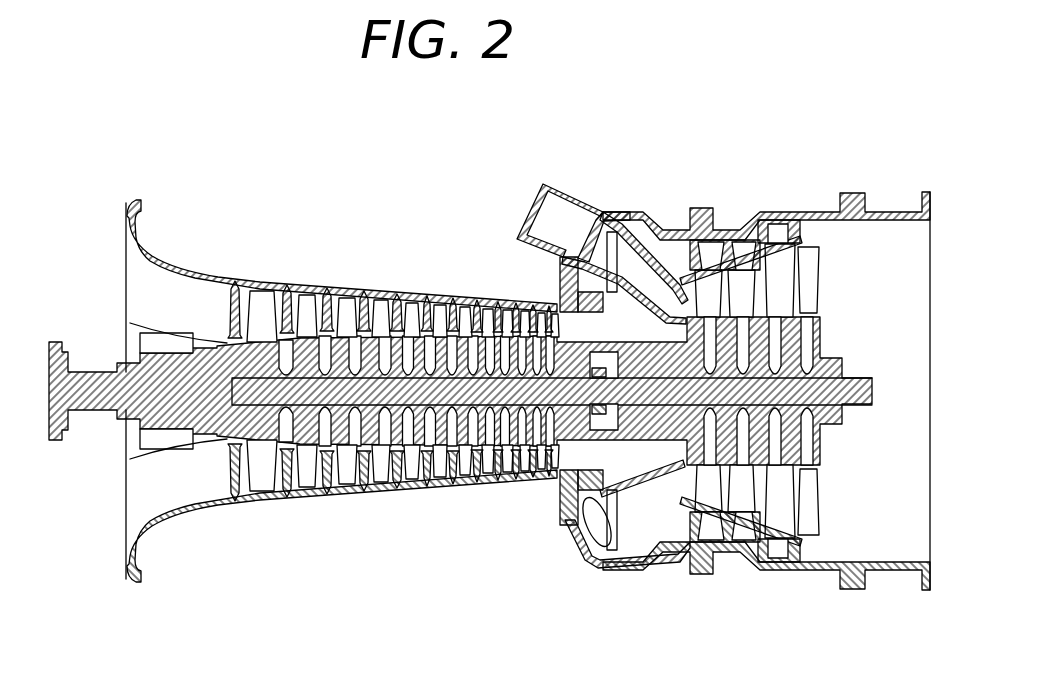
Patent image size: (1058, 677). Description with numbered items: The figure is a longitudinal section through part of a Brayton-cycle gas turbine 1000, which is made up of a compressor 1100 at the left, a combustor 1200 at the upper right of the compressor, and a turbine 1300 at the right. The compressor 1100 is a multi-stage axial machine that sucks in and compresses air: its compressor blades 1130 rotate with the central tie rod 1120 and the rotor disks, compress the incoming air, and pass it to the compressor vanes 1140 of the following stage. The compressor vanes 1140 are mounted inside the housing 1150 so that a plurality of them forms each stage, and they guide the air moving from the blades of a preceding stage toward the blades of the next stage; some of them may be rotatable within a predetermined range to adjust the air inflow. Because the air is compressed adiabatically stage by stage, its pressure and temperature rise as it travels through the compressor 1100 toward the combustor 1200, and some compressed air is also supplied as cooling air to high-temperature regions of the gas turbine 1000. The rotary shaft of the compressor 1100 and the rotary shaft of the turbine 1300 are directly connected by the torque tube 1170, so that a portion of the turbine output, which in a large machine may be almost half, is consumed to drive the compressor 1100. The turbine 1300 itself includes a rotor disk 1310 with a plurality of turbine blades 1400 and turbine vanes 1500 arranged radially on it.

The gas turbine 1000 is at (242, 79).
The compressor 1100 is at (375, 505).
The central tie rod 1120 is at (450, 424).
The compressor blades 1130 is at (310, 296).
The compressor vanes 1140 is at (318, 296).
The housing 1150 is at (415, 296).
The torque tube 1170 is at (635, 498).
The combustor 1200 is at (551, 170).
The turbine 1300 is at (727, 476).
The rotor disk 1310 is at (820, 328).
The turbine blades 1400 is at (787, 242).
The turbine vanes 1500 is at (747, 272).